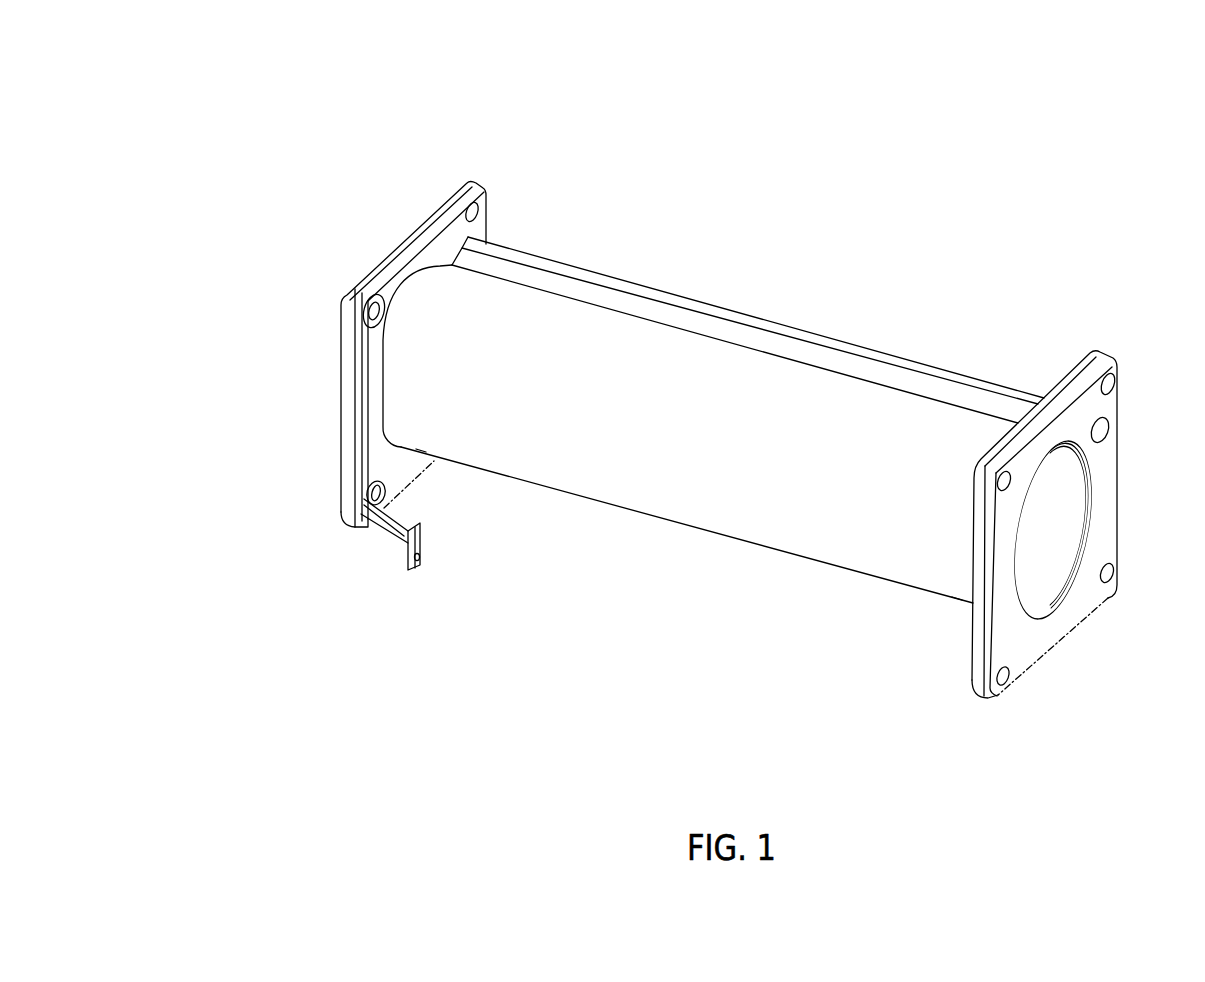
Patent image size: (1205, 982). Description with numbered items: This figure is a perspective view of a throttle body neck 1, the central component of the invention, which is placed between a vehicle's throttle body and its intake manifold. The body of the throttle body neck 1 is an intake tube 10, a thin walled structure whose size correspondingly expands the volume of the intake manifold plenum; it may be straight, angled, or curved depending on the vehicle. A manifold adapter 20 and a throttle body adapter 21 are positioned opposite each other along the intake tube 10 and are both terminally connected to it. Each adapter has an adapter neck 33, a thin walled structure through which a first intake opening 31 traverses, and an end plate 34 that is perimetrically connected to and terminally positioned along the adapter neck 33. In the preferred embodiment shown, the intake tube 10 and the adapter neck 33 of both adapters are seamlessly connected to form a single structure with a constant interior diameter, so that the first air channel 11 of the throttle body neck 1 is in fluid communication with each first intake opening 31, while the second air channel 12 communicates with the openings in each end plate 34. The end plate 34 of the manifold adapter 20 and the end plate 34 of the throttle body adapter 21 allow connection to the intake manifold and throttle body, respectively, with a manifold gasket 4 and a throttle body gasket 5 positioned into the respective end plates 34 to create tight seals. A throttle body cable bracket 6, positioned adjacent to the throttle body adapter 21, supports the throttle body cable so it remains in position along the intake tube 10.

The throttle body neck 1 is at (835, 112).
The manifold gasket 4 is at (1028, 654).
The throttle body gasket 5 is at (343, 338).
The throttle body cable bracket 6 is at (383, 532).
The intake tube 10 is at (692, 515).
The first air channel 11 is at (1070, 546).
The second air channel 12 is at (1107, 432).
The manifold adapter 20 is at (1105, 170).
The throttle body adapter 21 is at (378, 76).
The first intake opening 31 is at (1060, 592).
The adapter neck 33 is at (420, 446).
The end plate 34 is at (480, 186).